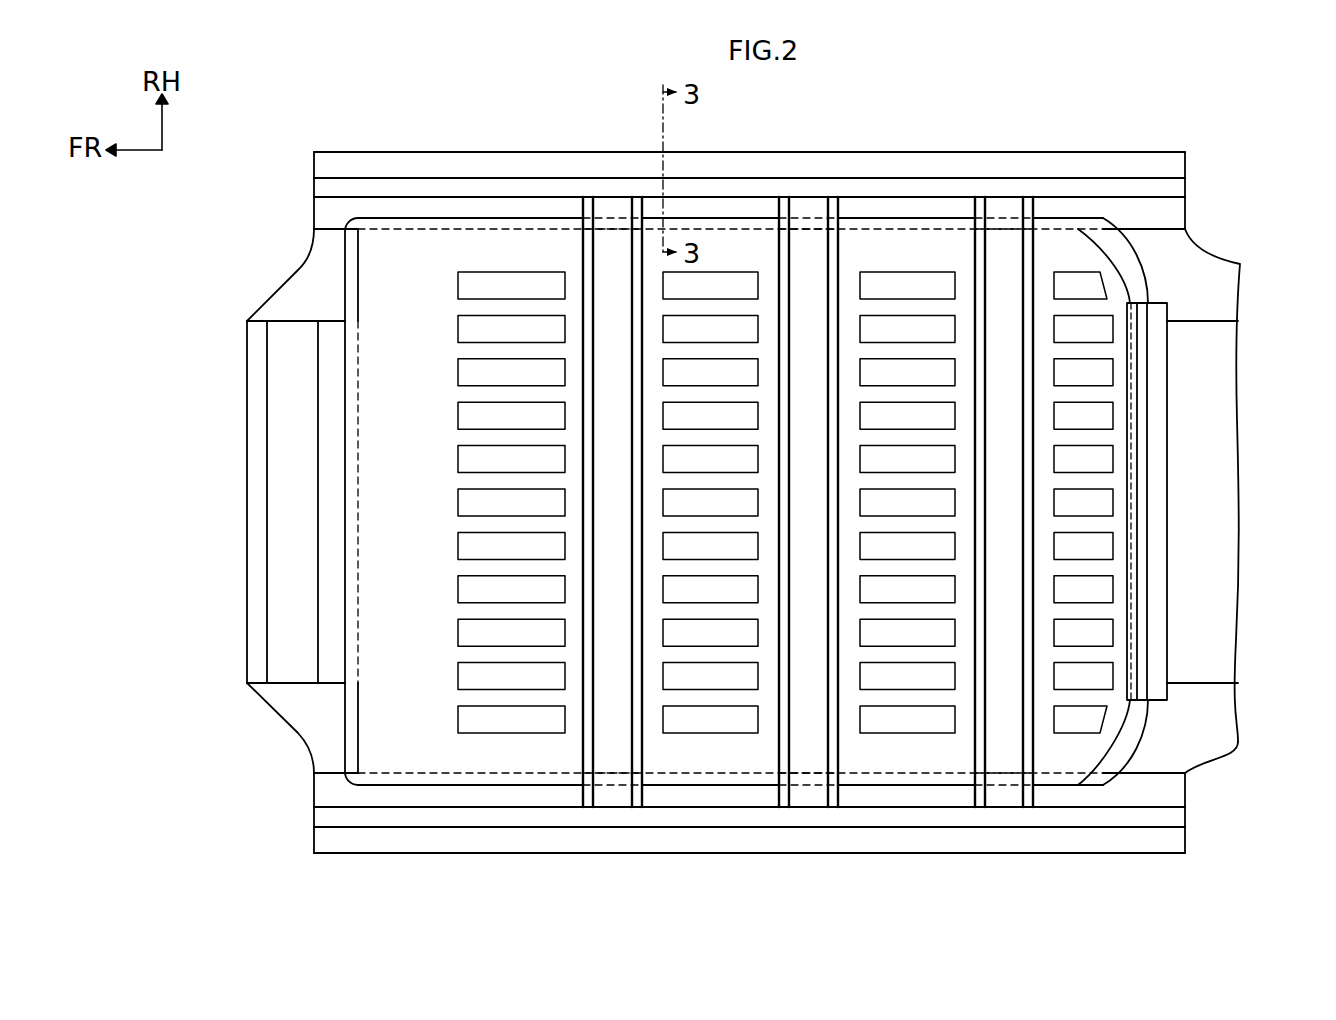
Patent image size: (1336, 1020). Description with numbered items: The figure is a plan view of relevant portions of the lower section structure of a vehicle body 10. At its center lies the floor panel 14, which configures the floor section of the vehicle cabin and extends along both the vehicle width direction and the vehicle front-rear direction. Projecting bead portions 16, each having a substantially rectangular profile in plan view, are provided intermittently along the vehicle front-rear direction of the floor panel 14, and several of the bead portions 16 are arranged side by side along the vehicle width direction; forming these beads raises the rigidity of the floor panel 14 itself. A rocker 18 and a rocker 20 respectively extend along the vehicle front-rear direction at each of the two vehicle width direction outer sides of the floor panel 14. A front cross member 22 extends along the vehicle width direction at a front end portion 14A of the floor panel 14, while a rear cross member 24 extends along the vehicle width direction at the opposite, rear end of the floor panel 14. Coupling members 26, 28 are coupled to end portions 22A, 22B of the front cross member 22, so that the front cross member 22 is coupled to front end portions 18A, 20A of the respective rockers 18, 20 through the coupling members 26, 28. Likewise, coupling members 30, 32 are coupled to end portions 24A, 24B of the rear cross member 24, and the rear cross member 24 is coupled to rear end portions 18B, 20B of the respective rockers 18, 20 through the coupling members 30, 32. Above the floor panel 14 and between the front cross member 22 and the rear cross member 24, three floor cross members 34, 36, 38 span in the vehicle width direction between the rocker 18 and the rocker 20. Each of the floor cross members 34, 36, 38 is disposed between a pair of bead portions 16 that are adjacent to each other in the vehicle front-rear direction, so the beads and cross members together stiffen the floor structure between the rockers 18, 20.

The vehicle body 10 is at (1242, 118).
The floor panel 14 is at (877, 245).
The front end portion 14A is at (382, 274).
The projecting bead portions 16 is at (535, 373).
The rocker 18 is at (713, 856).
The front end portion 18A is at (338, 855).
The rear end portion 18B is at (1172, 855).
The rocker 20 is at (790, 150).
The front end portion 20A is at (332, 157).
The rear end portion 20B is at (1170, 157).
The front cross member 22 is at (283, 541).
The end portion 22A is at (282, 664).
The end portion 22B is at (280, 338).
The rear cross member 24 is at (1155, 487).
The end portion 24A is at (1157, 663).
The end portion 24B is at (1157, 328).
The coupling member 26 is at (320, 730).
The coupling member 28 is at (283, 292).
The coupling member 30 is at (1202, 712).
The coupling member 32 is at (1207, 270).
The floor cross member 34 is at (612, 762).
The floor cross member 36 is at (808, 762).
The floor cross member 38 is at (1004, 762).